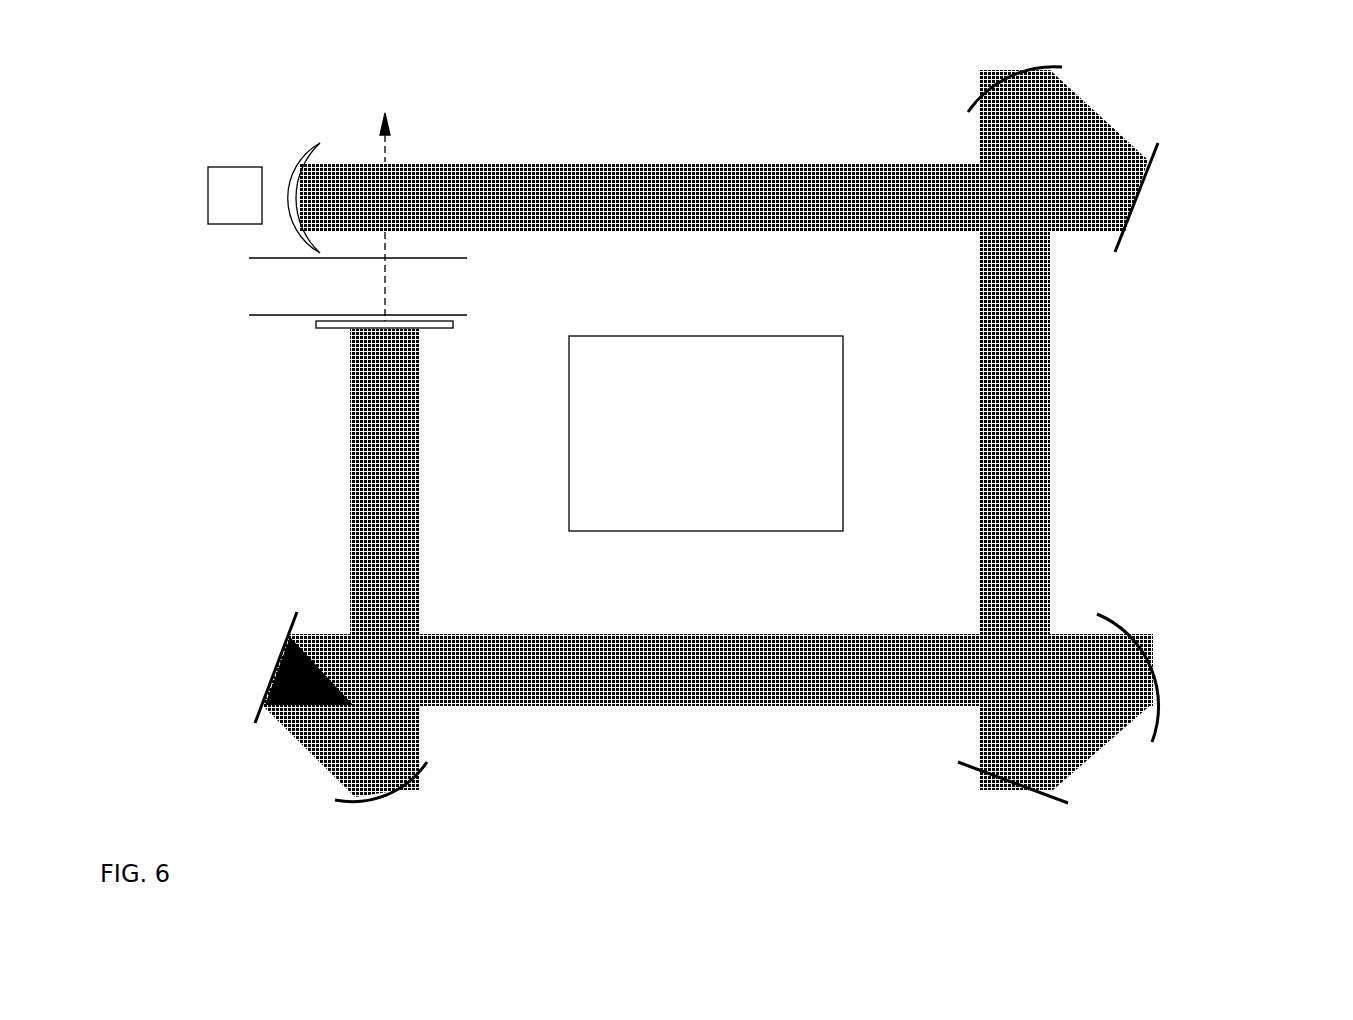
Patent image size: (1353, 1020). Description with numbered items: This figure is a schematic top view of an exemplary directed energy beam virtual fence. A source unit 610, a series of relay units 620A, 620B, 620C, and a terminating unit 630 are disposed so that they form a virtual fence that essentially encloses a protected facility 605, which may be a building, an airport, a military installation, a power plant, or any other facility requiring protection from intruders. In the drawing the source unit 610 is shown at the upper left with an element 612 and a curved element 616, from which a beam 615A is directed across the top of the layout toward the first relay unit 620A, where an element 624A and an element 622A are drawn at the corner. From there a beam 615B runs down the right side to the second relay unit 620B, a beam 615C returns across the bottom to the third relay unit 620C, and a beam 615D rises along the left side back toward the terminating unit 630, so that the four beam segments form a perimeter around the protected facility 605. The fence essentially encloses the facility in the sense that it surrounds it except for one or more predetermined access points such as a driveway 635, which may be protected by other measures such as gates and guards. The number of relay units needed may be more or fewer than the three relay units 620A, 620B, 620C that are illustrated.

The protected facility 605 is at (706, 433).
The source unit 610 is at (233, 110).
The laser source 612 is at (235, 195).
The laser beam segment 615A is at (657, 183).
The laser beam segment 615B is at (1035, 445).
The laser beam segment 615C is at (675, 655).
The laser beam segment 615D is at (372, 502).
The curved mirror 616 is at (320, 143).
The relay unit 620A is at (1140, 69).
The relay unit 620B is at (1182, 638).
The relay unit 620C is at (246, 653).
The flat mirror 622A is at (1127, 232).
The curved mirror 624A is at (970, 108).
The terminating unit 630 is at (420, 350).
The driveway 635 is at (440, 283).